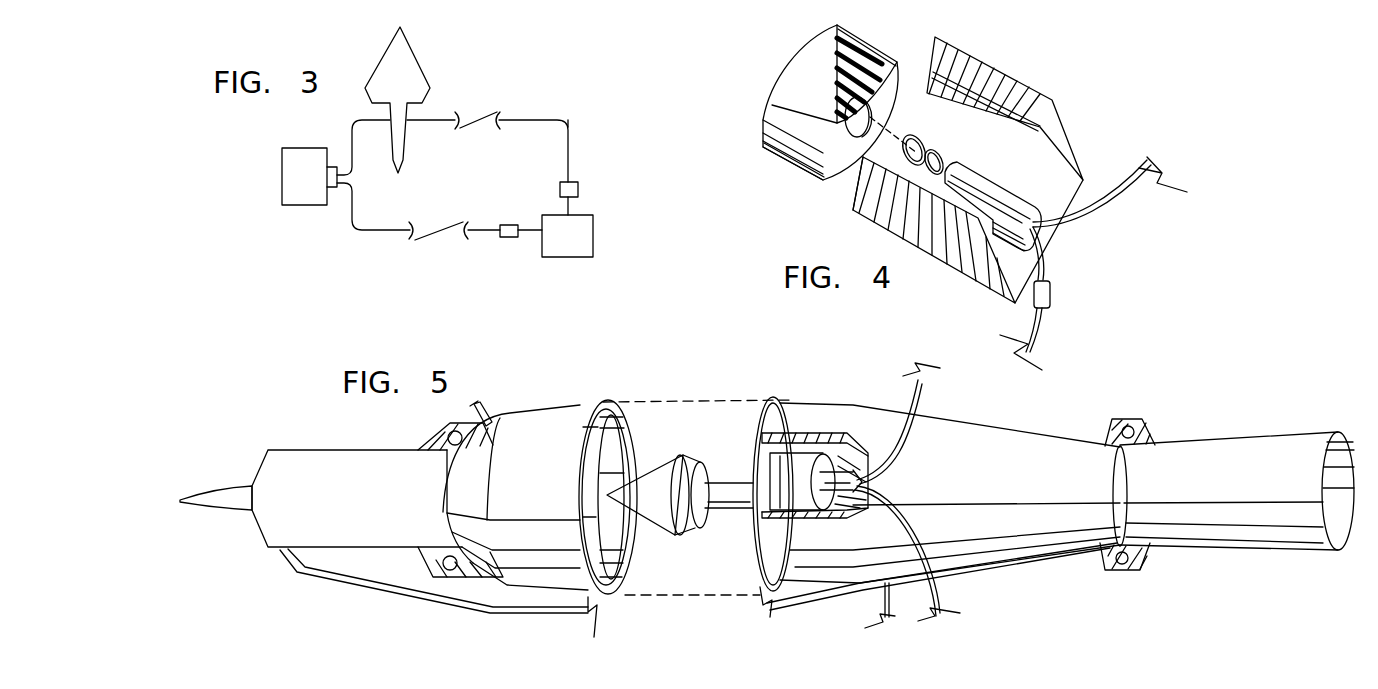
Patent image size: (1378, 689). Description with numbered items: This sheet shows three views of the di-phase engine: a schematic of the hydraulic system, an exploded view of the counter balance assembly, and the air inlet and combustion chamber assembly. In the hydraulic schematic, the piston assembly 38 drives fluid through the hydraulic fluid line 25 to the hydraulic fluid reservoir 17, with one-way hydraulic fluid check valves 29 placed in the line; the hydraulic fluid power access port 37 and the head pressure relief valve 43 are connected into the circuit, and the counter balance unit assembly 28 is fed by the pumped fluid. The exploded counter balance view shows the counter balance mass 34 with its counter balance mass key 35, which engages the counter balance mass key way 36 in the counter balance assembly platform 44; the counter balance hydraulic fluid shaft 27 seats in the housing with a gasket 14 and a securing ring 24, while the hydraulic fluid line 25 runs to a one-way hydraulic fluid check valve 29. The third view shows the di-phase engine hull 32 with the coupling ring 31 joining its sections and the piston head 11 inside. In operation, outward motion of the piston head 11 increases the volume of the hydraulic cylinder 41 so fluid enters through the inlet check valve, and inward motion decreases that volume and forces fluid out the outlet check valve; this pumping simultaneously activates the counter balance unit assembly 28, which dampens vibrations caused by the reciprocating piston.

In FIG. 5, the piston head 11 is at (683, 455).
In FIG. 4, the gasket 14 is at (858, 183).
In FIG. 3, the hydraulic fluid reservoir 17 is at (593, 238).
In FIG. 4, the securing ring 24 is at (853, 210).
In FIG. 3, the hydraulic fluid line 25 is at (568, 127).
In FIG. 4, the hydraulic fluid line 25 is at (1107, 217).
In FIG. 4, the counter balance hydraulic fluid shaft 27 is at (973, 167).
In FIG. 3, the counter balance unit assembly 28 is at (282, 188).
In FIG. 3, the one-way hydraulic fluid check valve 29 is at (477, 118).
In FIG. 4, the one-way hydraulic fluid check valve 29 is at (1053, 292).
In FIG. 5, the coupling ring 31 is at (760, 570).
In FIG. 5, the di-phase engine hull 32 is at (352, 450).
In FIG. 4, the counter balance mass 34 is at (818, 34).
In FIG. 4, the counter balance mass key 35 is at (778, 158).
In FIG. 4, the counter balance mass key way 36 is at (1042, 125).
In FIG. 3, the hydraulic fluid power access port 37 is at (578, 188).
In FIG. 3, the piston assembly 38 is at (407, 33).
In FIG. 4, the hydraulic cylinder 41 is at (845, 105).
In FIG. 3, the head pressure relief valve 43 is at (508, 237).
In FIG. 4, the counter balance assembly platform 44 is at (1007, 72).